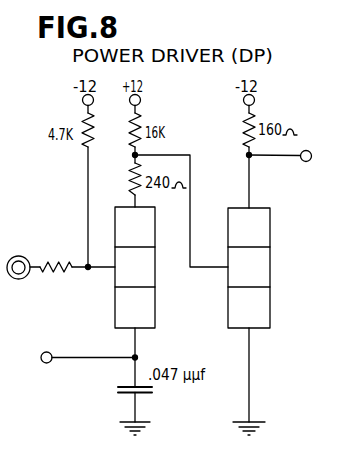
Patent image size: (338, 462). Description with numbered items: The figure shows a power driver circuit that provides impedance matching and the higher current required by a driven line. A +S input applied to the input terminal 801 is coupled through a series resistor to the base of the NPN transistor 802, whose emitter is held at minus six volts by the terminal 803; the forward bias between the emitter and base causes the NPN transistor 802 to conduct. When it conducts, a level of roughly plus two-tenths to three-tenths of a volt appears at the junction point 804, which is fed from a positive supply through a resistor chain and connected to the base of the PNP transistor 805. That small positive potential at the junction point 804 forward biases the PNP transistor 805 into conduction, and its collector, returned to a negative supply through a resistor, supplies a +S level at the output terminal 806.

The input terminal 801 is at (20, 279).
The NPN transistor 802 is at (155, 288).
The emitter supply terminal 803 is at (45, 363).
The junction point 804 is at (133, 156).
The PNP transistor 805 is at (270, 295).
The output terminal 806 is at (305, 162).